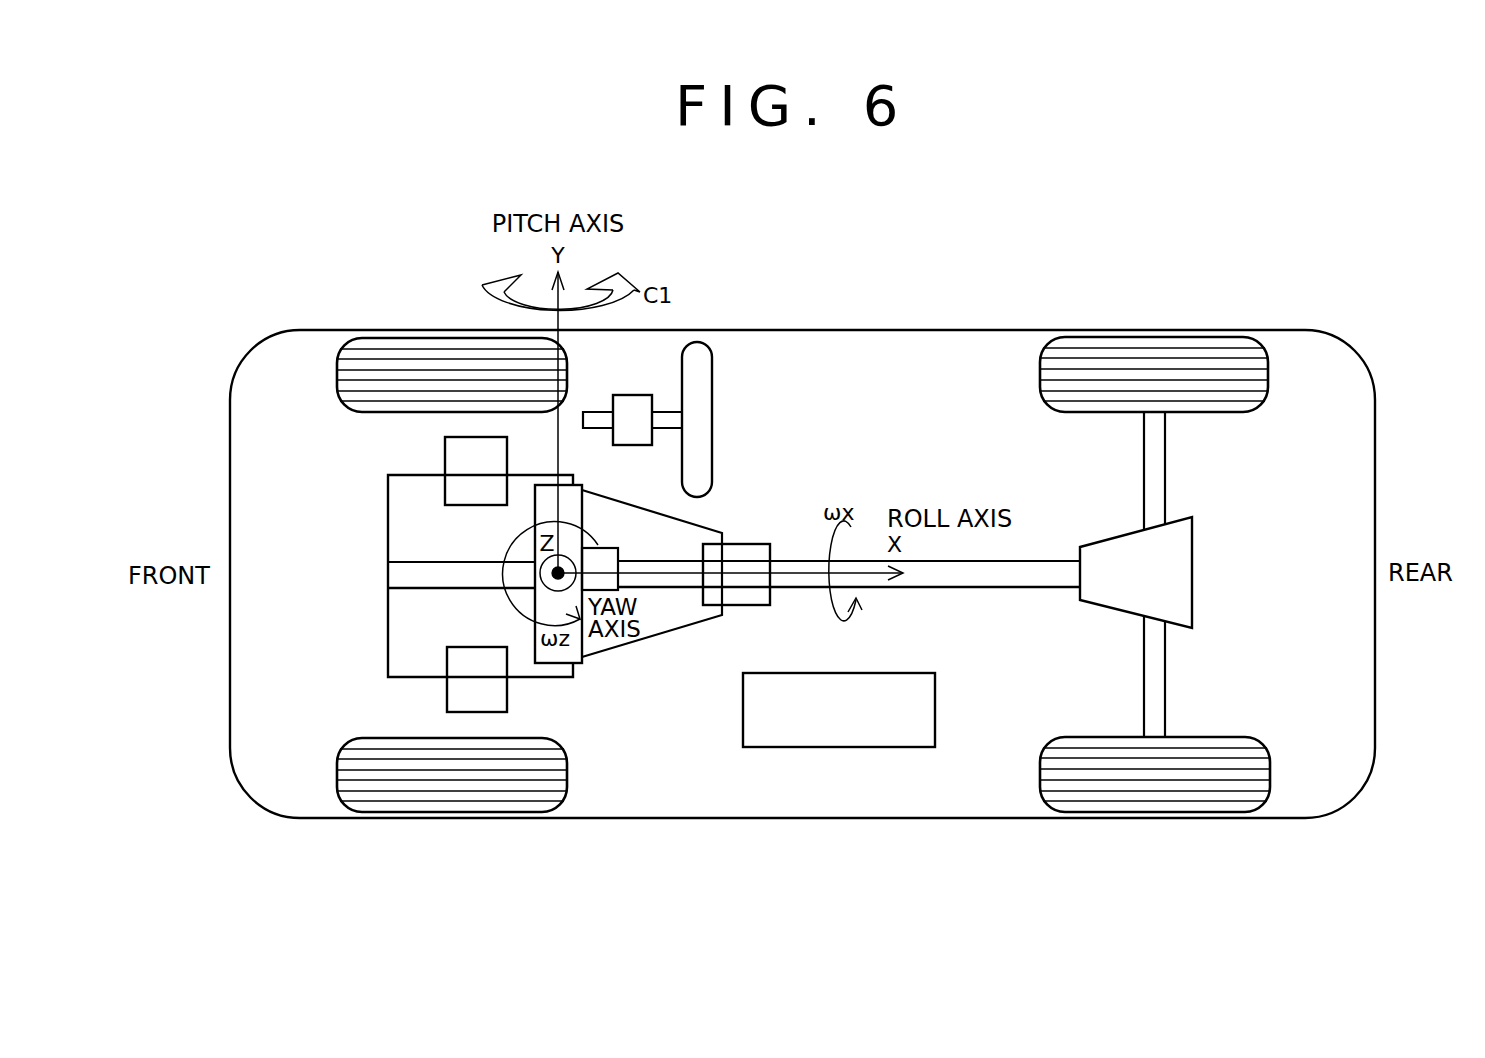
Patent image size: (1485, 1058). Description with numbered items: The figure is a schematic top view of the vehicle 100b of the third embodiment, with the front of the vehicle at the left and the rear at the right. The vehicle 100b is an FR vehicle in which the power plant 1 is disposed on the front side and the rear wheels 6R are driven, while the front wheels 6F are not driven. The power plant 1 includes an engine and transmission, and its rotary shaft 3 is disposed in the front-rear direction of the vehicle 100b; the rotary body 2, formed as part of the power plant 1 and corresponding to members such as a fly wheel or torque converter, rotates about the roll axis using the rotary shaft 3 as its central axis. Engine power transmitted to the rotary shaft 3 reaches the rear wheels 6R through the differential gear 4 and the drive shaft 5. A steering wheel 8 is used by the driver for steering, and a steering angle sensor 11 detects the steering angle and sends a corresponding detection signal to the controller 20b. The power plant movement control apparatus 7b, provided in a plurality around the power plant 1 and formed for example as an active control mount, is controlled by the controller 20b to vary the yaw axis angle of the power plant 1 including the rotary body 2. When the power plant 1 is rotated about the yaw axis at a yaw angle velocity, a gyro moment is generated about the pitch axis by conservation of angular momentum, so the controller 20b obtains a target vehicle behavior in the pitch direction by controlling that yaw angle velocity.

The vehicle 100b is at (818, 234).
The power plant 1 is at (400, 540).
The rotary body 2 is at (553, 659).
The rotary shaft 3 is at (452, 585).
The differential gear 4 is at (1098, 548).
The drive shaft 5 is at (1166, 467).
The front wheels 6F is at (450, 338).
The rear wheels 6R is at (1150, 338).
The power plant movement control apparatus 7b is at (445, 455).
The steering wheel 8 is at (700, 341).
The steering angle sensor 11 is at (632, 394).
The controller 20b is at (935, 708).